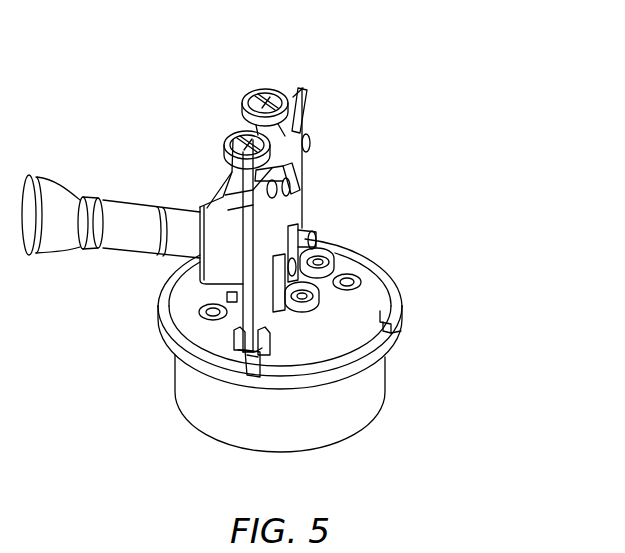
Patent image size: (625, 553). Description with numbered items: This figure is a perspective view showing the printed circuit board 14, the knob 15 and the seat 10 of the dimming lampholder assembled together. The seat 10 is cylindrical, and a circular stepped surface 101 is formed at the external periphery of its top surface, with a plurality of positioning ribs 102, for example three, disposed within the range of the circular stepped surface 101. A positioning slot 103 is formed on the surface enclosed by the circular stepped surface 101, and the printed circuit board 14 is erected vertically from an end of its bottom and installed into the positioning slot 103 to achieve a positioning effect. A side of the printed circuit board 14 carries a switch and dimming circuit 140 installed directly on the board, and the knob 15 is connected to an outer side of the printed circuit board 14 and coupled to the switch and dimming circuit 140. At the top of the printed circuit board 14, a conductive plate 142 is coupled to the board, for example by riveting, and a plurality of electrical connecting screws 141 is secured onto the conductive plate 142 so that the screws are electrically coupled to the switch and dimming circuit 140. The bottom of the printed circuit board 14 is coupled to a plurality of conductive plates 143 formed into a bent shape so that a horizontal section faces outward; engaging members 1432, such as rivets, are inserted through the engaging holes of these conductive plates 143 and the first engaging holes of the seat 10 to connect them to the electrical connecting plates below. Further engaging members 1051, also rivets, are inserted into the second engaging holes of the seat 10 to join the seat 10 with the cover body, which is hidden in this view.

The seat 10 is at (387, 380).
The circular stepped surface 101 is at (168, 305).
The positioning ribs 102 is at (402, 323).
The positioning slot 103 is at (245, 357).
The engaging members 1051 is at (362, 281).
The printed circuit board 14 is at (293, 203).
The switch and dimming circuit 140 is at (228, 218).
The electrical connecting screws 141 is at (252, 90).
The conductive plate 142 is at (282, 90).
The conductive plates 143 is at (320, 246).
The engaging members 1432 is at (330, 262).
The knob 15 is at (117, 215).